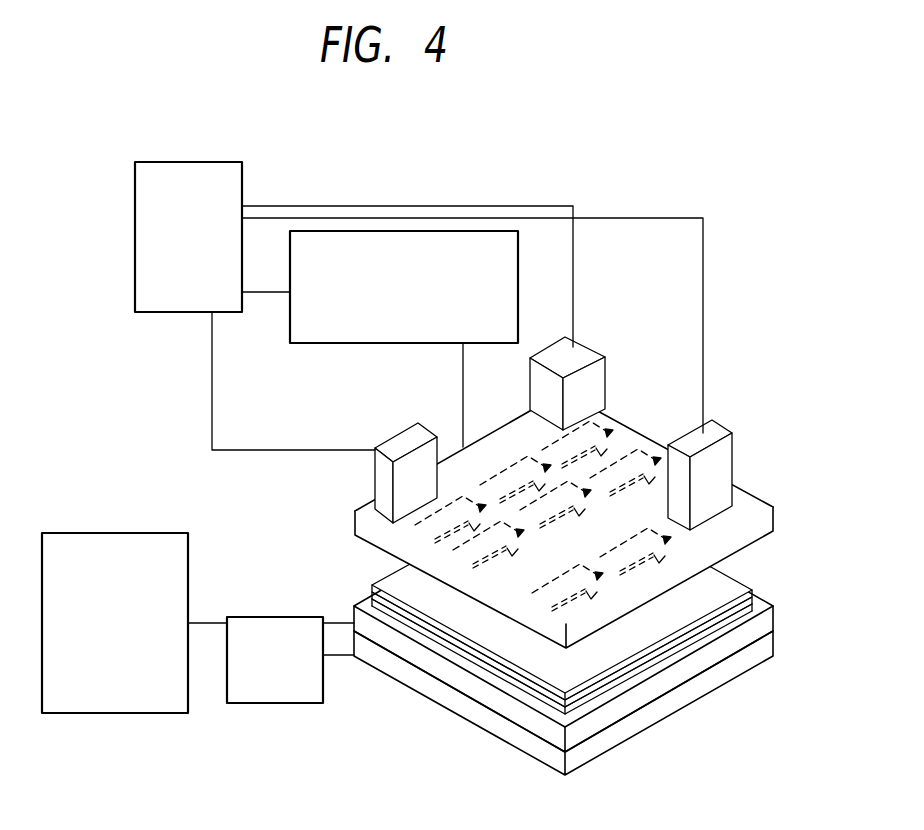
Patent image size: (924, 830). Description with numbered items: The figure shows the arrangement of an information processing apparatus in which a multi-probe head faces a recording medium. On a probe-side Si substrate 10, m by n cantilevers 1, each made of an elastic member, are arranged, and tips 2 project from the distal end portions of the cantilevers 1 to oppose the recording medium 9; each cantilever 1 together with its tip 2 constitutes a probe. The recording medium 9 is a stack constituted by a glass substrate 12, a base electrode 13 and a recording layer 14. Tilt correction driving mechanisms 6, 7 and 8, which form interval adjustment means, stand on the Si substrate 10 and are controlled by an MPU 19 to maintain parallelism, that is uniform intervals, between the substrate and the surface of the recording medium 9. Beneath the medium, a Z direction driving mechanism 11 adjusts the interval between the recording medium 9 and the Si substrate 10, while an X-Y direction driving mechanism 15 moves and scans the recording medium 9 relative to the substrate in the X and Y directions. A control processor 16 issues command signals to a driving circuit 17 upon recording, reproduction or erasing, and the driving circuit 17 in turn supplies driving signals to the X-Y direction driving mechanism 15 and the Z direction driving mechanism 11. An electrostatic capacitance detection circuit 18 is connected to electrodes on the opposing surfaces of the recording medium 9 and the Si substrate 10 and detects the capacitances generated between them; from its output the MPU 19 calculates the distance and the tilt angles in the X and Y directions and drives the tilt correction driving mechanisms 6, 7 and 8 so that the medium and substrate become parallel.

The cantilever 1 is at (637, 450).
The tip 2 is at (643, 477).
The tilt correction driving mechanism 6 is at (727, 431).
The tilt correction driving mechanism 7 is at (600, 382).
The tilt correction driving mechanism 8 is at (375, 482).
The recording medium 9 is at (622, 598).
The Si substrate 10 is at (768, 525).
The Z direction driving mechanism 11 is at (768, 643).
The glass substrate 12 is at (755, 598).
The base electrode 13 is at (753, 594).
The recording layer 14 is at (594, 598).
The X-Y direction driving mechanism 15 is at (766, 618).
The control processor 16 is at (132, 532).
The driving circuit 17 is at (295, 616).
The electrostatic capacitance detection circuit 18 is at (518, 254).
The MPU 19 is at (211, 161).